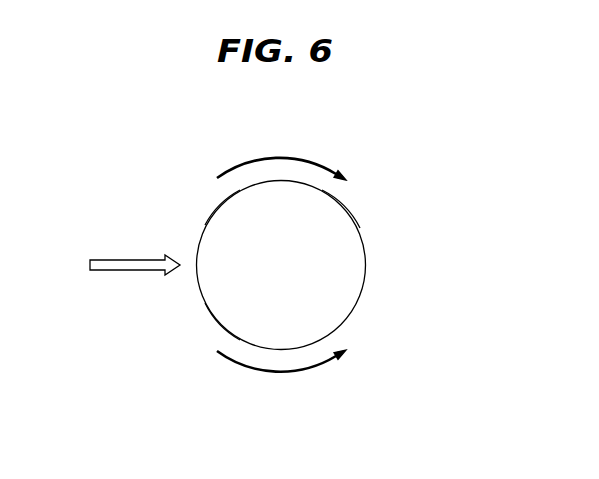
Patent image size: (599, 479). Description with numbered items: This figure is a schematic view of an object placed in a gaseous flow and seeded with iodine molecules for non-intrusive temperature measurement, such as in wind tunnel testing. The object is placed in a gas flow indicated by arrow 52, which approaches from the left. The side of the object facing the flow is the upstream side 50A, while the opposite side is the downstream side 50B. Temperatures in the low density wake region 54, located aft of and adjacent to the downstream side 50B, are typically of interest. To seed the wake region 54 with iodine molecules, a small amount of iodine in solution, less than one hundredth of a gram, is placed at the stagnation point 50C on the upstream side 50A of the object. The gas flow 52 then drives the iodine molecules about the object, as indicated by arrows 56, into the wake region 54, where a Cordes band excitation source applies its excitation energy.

The wake region 54 is at (412, 285).
The upstream side 50A is at (205, 225).
The downstream side 50B is at (360, 228).
The stagnation point 50C is at (205, 303).
The gas flow 52 is at (123, 258).
The arrows indicating I2 molecule transport 56 is at (280, 158).